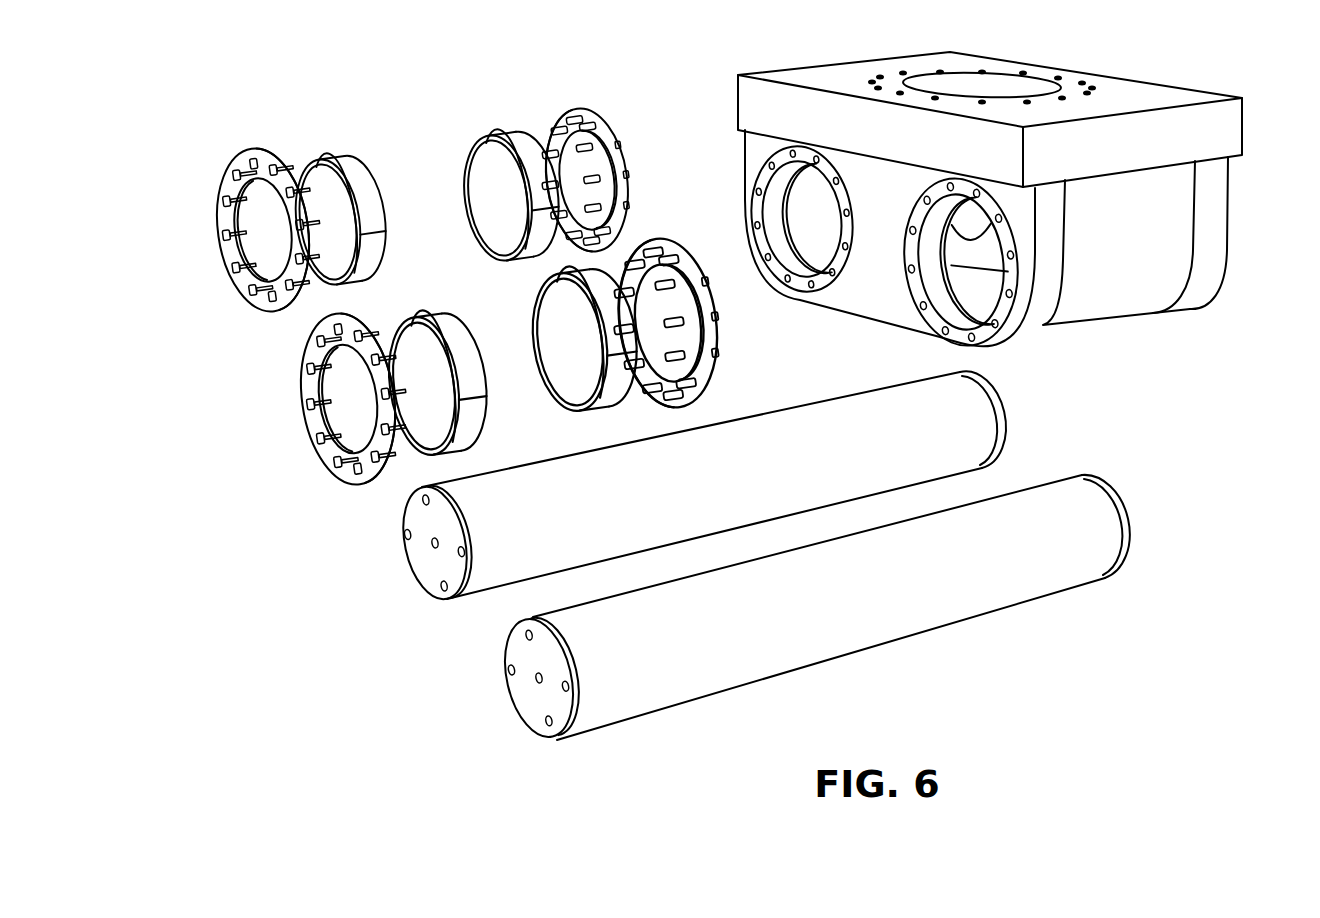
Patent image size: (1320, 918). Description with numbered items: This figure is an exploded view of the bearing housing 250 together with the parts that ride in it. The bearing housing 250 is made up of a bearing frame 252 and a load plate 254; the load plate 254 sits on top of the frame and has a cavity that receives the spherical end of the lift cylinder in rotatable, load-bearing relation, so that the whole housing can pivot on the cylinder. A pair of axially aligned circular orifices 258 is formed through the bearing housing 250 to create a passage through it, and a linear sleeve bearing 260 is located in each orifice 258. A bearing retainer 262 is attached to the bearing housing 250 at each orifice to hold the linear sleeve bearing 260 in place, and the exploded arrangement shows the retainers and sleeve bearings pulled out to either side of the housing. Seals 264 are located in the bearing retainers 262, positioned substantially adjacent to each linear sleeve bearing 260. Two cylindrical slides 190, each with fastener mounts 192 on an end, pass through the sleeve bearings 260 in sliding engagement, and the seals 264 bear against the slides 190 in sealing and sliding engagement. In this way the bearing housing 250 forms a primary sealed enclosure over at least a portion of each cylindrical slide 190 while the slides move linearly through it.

The cylindrical slide 190 is at (861, 426).
The fastener mount 192 is at (433, 585).
The bearing housing 250 is at (999, 190).
The bearing frame 252 is at (1092, 293).
The load plate 254 is at (1224, 126).
The circular orifice 258 is at (808, 212).
The linear sleeve bearing 260 is at (360, 187).
The bearing retainer 262 is at (276, 162).
The seal 264 is at (228, 251).